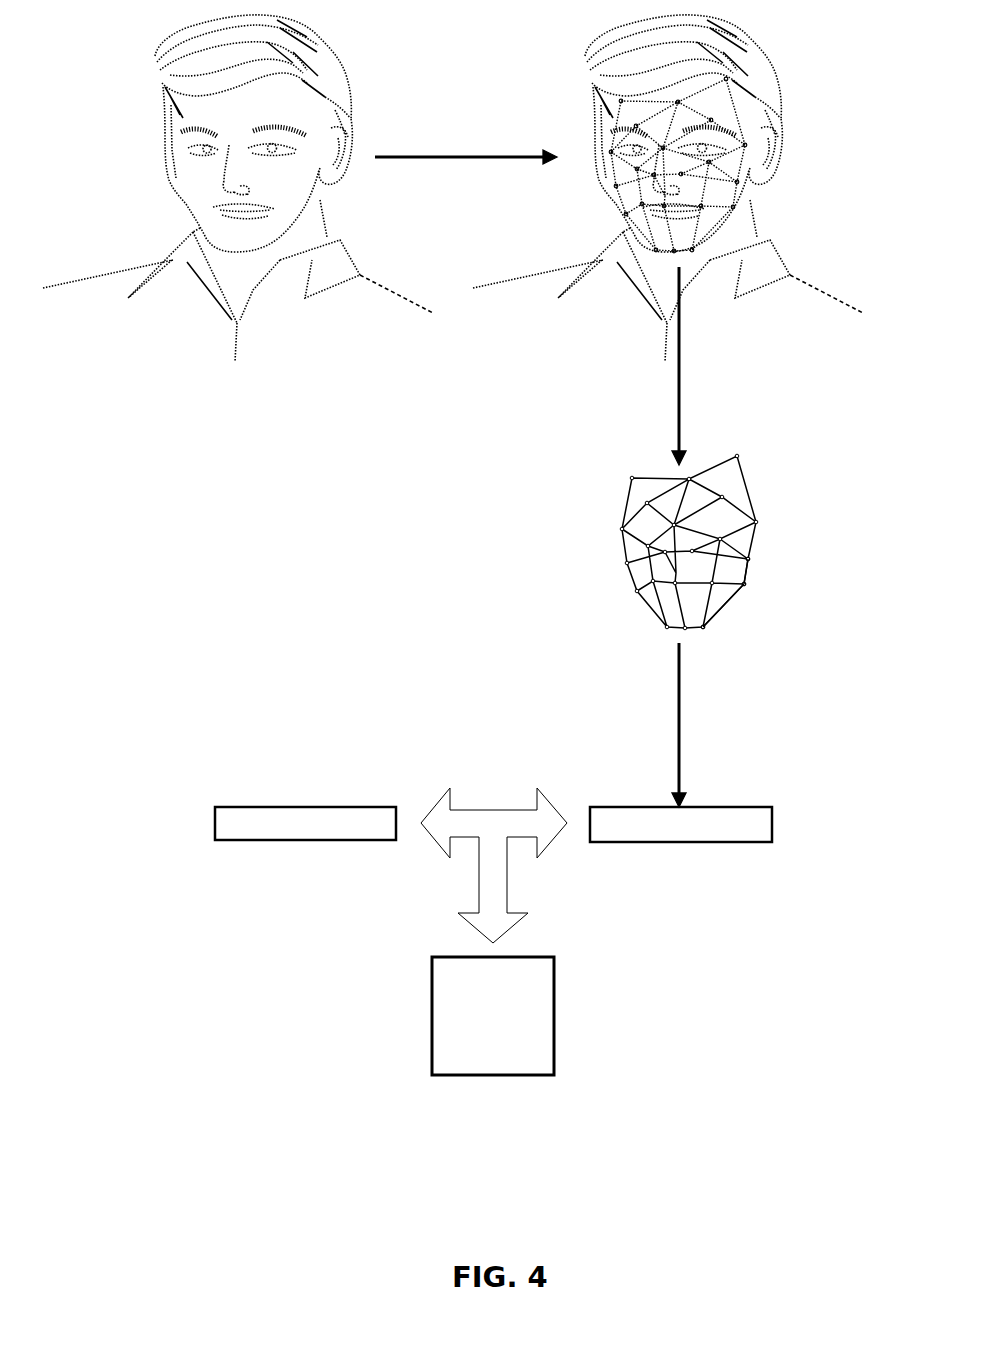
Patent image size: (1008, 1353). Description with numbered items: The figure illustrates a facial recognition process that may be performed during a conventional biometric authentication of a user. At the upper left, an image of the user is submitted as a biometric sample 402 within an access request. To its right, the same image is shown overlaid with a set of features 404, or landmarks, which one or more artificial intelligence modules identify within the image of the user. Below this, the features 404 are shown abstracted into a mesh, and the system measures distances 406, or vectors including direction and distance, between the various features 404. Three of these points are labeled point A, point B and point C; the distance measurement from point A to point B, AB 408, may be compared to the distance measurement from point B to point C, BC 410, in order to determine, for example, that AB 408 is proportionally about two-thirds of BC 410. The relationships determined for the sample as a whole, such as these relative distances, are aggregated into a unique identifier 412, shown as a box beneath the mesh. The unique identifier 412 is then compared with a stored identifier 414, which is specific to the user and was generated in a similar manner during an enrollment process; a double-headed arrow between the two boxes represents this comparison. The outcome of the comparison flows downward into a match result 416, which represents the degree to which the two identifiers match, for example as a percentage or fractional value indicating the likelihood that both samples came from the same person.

The biometric sample 402 is at (350, 312).
The features 404 is at (743, 202).
The distances 406 is at (622, 478).
The distance measurement from point A to point B (AB) 408 is at (747, 572).
The distance measurement from point B to point C (BC) 410 is at (725, 605).
The unique identifier 412 is at (781, 850).
The stored identifier 414 is at (205, 798).
The match result 416 is at (493, 1016).
The point A is at (758, 549).
The point B is at (758, 594).
The point C is at (715, 638).